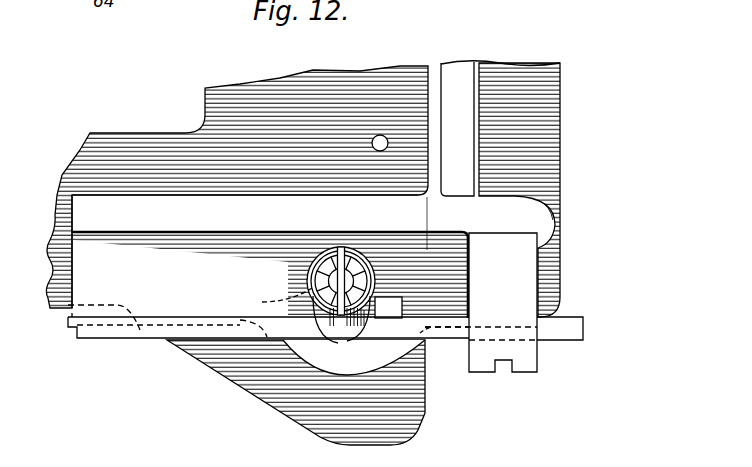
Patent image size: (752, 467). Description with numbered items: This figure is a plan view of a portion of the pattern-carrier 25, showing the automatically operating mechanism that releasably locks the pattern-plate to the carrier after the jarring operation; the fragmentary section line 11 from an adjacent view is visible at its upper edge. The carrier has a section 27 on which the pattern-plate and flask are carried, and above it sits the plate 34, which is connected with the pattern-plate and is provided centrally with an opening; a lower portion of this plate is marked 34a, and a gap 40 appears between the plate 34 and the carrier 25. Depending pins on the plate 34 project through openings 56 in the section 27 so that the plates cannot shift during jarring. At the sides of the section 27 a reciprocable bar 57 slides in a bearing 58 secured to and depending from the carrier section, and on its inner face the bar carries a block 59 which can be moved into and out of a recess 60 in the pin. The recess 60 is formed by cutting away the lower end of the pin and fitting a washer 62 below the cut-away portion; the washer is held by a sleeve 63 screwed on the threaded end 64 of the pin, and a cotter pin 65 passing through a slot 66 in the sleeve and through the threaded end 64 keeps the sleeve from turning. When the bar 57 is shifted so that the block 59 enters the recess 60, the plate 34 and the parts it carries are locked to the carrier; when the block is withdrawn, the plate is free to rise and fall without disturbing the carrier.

The frame 11 is at (178, 0).
The pattern-carrier 25 is at (543, 182).
The section of the pattern-carrier 27 is at (267, 244).
The plate 34 is at (240, 100).
The lobe of block 34a is at (257, 382).
The slot 40 is at (398, 161).
The openings 56 is at (307, 279).
The reciprocable bars 57 is at (141, 332).
The bearings 58 is at (505, 343).
The blocks 59 is at (387, 300).
The recesses 60 is at (284, 293).
The washers 62 is at (314, 268).
The sleeves 63 is at (313, 268).
The threaded ends 64 is at (370, 254).
The cotter pins 65 is at (343, 247).
The slots 66 is at (346, 318).